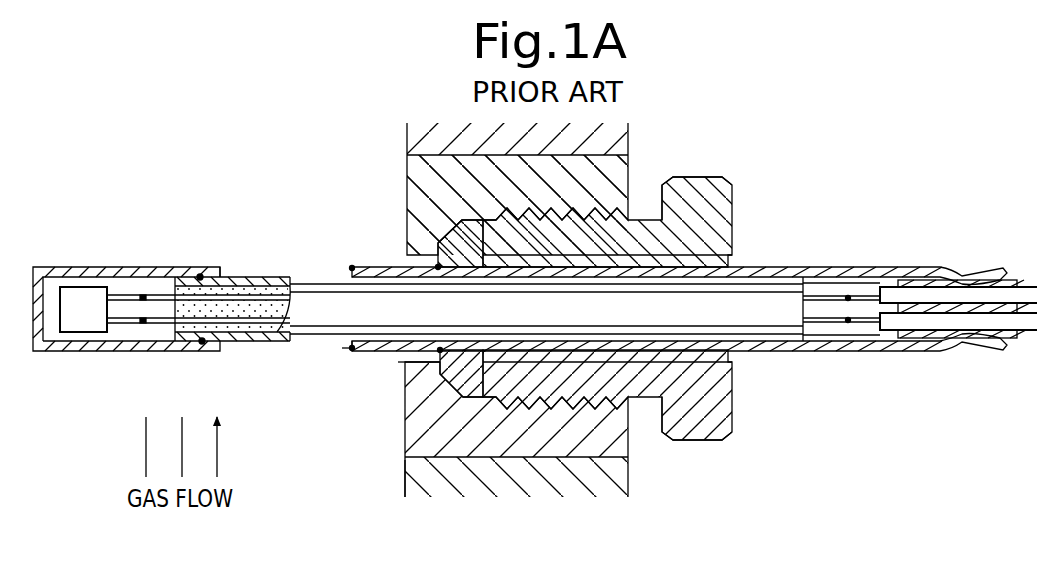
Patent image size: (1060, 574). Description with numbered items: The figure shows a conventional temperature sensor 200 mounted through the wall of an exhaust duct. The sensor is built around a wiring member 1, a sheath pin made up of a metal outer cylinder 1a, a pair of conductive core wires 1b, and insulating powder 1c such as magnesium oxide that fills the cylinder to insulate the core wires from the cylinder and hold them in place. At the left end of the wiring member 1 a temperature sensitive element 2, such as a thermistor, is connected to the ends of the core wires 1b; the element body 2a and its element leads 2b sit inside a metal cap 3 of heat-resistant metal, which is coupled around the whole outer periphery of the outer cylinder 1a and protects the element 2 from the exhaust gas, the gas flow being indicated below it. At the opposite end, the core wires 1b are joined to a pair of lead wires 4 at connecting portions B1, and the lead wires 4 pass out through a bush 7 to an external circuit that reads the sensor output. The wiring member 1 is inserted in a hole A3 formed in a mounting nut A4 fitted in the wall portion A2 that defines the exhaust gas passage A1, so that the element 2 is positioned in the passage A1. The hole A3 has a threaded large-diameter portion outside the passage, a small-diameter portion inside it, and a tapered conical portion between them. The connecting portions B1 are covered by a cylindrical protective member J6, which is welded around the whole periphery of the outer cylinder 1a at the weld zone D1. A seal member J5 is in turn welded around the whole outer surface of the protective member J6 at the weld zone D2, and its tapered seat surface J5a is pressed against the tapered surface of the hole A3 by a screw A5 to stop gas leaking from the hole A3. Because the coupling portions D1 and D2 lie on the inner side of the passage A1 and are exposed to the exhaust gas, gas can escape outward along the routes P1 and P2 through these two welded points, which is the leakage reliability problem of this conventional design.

The wiring member (sheath pin) 1 is at (332, 300).
The metal outer cylinder 1a is at (272, 340).
The conductive core wires 1b is at (163, 298).
The insulating powder 1c is at (227, 312).
The temperature sensitive element 2 is at (73, 298).
The sensing element body 2a is at (63, 338).
The element lead wires 2b is at (123, 297).
The metal cap 3 is at (38, 272).
The lead wires 4 is at (1027, 290).
The rubber bush 7 is at (917, 282).
The temperature sensor 200 is at (252, 250).
The exhaust gas passage A1 is at (325, 462).
The wall portion A2 is at (627, 497).
The hole A3 is at (610, 438).
The mounting nut A4 is at (618, 473).
The screw A5 is at (695, 210).
The connecting portions (lead wire coupling portions) B1 is at (846, 295).
The weld zone (coupling portion) D1 is at (352, 347).
The weld zone (coupling portion) D2 is at (440, 351).
The seal member J5 is at (462, 250).
The tapered seat surface J5a is at (440, 243).
The protective member (sleeve) J6 is at (772, 268).
The leakage route P1 is at (398, 363).
The leakage route P2 is at (342, 350).